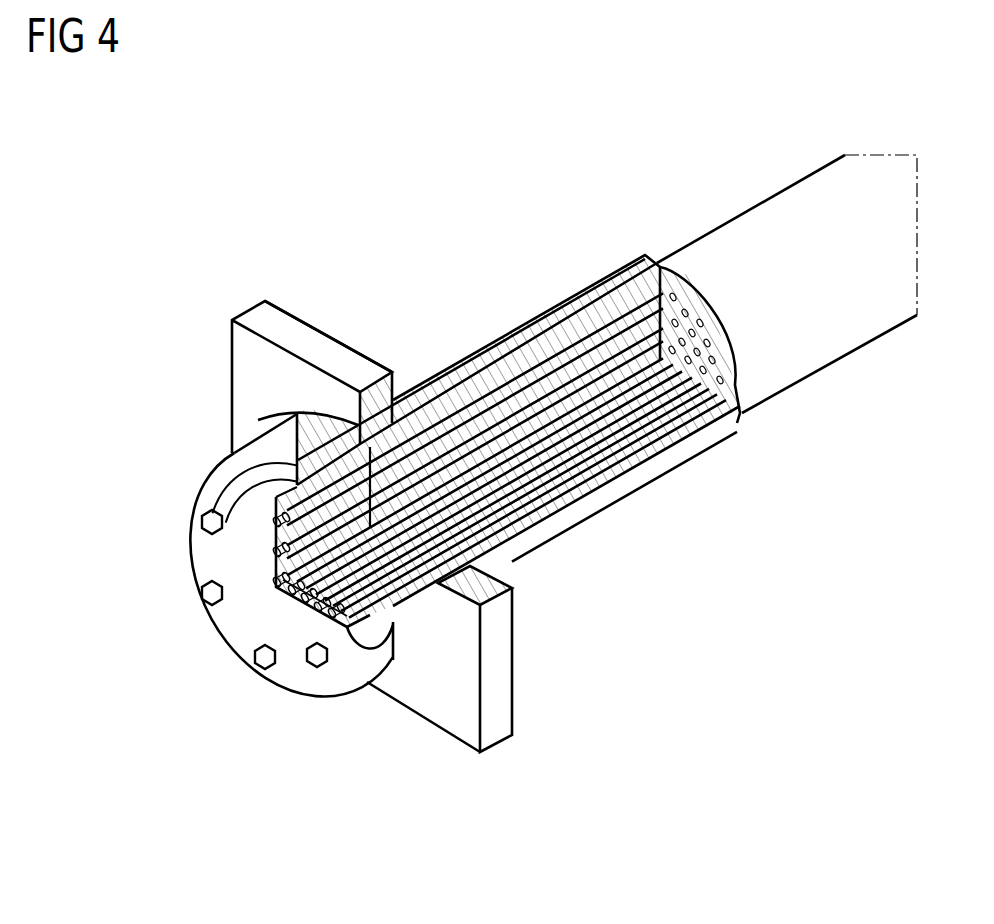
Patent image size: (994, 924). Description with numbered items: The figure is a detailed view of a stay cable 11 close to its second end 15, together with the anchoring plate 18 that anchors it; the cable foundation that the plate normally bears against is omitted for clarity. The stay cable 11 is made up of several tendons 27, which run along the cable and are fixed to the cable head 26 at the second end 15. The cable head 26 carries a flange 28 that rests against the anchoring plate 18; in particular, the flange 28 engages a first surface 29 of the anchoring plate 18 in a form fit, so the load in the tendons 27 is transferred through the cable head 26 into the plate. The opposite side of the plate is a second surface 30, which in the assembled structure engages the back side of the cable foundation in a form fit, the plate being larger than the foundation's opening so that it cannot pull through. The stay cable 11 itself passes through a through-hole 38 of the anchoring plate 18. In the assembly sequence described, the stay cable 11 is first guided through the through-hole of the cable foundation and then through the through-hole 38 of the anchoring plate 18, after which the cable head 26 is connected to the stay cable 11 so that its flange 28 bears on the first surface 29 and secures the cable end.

The stay cable 11 is at (267, 198).
The second end 15 is at (365, 565).
The anchoring plate 18 is at (262, 318).
The cable head 26 is at (236, 464).
The tendons 27 is at (470, 403).
The flange 28 is at (430, 625).
The first surface 29 is at (250, 385).
The second surface 30 is at (370, 350).
The through-hole 38 is at (470, 583).